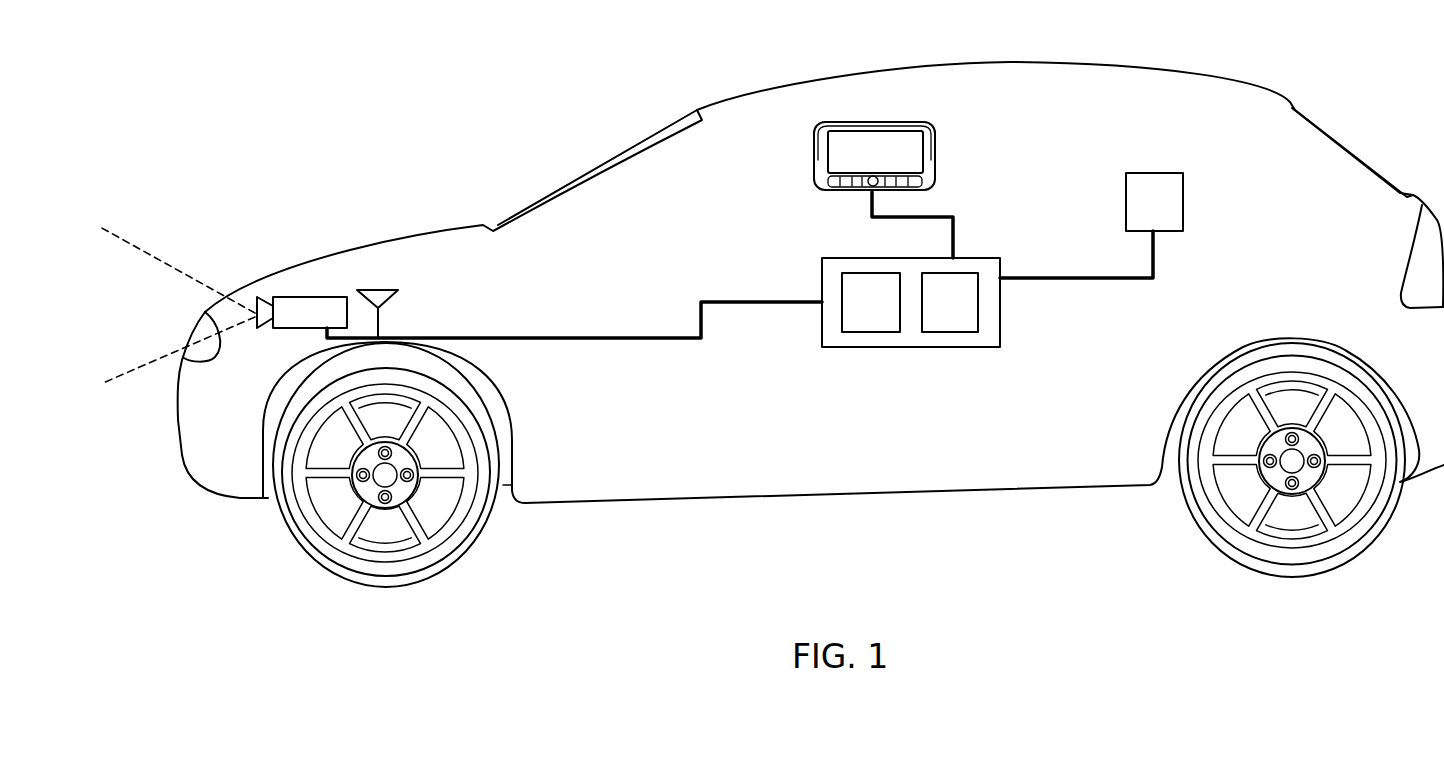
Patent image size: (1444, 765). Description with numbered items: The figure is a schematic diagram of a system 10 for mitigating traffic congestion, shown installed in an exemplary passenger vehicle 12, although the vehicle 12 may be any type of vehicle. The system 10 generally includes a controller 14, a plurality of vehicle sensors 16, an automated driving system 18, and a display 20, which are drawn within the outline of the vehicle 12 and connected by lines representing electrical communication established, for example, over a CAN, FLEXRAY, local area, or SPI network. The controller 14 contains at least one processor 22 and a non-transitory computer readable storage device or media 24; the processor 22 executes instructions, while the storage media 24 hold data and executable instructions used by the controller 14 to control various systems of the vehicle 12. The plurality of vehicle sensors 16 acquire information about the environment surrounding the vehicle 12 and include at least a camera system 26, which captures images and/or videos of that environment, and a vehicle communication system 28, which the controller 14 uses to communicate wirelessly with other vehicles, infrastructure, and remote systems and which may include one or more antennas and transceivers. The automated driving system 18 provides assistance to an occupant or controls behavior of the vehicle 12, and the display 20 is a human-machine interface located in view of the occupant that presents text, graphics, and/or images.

The system for mitigating traffic congestion 10 is at (811, 306).
The vehicle 12 is at (1200, 78).
The controller 14 is at (956, 308).
The plurality of vehicle sensors 16 is at (268, 352).
The automated driving system 18 is at (1138, 214).
The display 20 is at (935, 175).
The processor 22 is at (855, 315).
The non-transitory computer readable storage device or media 24 is at (934, 315).
The camera system 26 is at (294, 325).
The vehicle communication system 28 is at (363, 290).